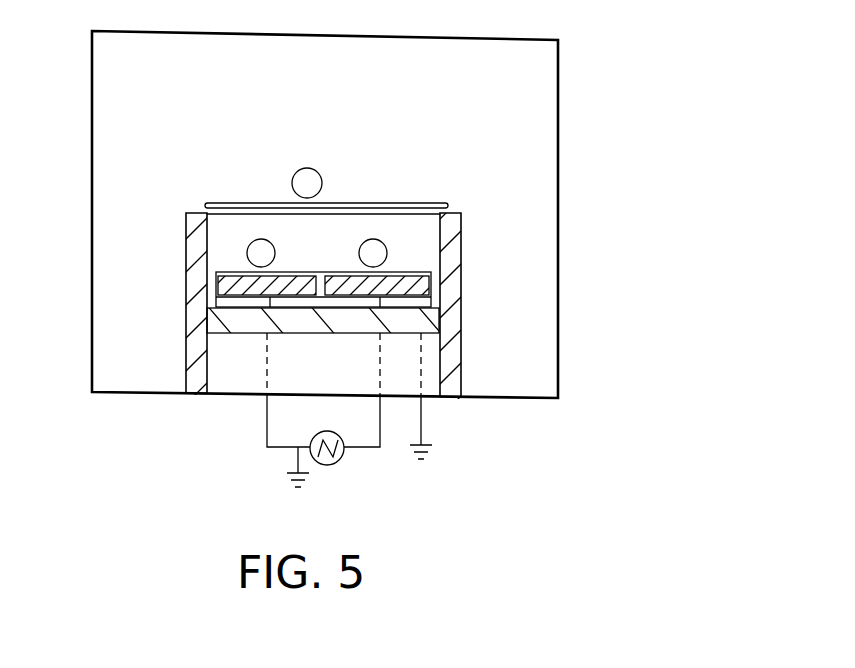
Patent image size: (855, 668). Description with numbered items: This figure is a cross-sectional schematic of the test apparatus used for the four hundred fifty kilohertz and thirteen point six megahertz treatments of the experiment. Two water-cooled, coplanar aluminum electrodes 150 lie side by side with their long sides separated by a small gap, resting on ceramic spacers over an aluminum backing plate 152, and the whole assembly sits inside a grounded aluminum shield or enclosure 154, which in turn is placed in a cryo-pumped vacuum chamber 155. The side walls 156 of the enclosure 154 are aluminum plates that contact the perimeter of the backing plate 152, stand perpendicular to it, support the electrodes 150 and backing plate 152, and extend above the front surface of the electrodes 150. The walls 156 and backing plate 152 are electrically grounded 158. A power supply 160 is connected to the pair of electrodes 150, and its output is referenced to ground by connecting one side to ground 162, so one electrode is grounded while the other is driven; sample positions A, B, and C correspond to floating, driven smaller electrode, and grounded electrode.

The electrodes 150 is at (218, 285).
The backing plate 152 is at (242, 303).
The enclosure 154 is at (462, 317).
The vacuum chamber 155 is at (558, 90).
The side walls 156 is at (197, 232).
The ground 158 is at (435, 453).
The power supply 160 is at (344, 457).
The ground 162 is at (293, 482).